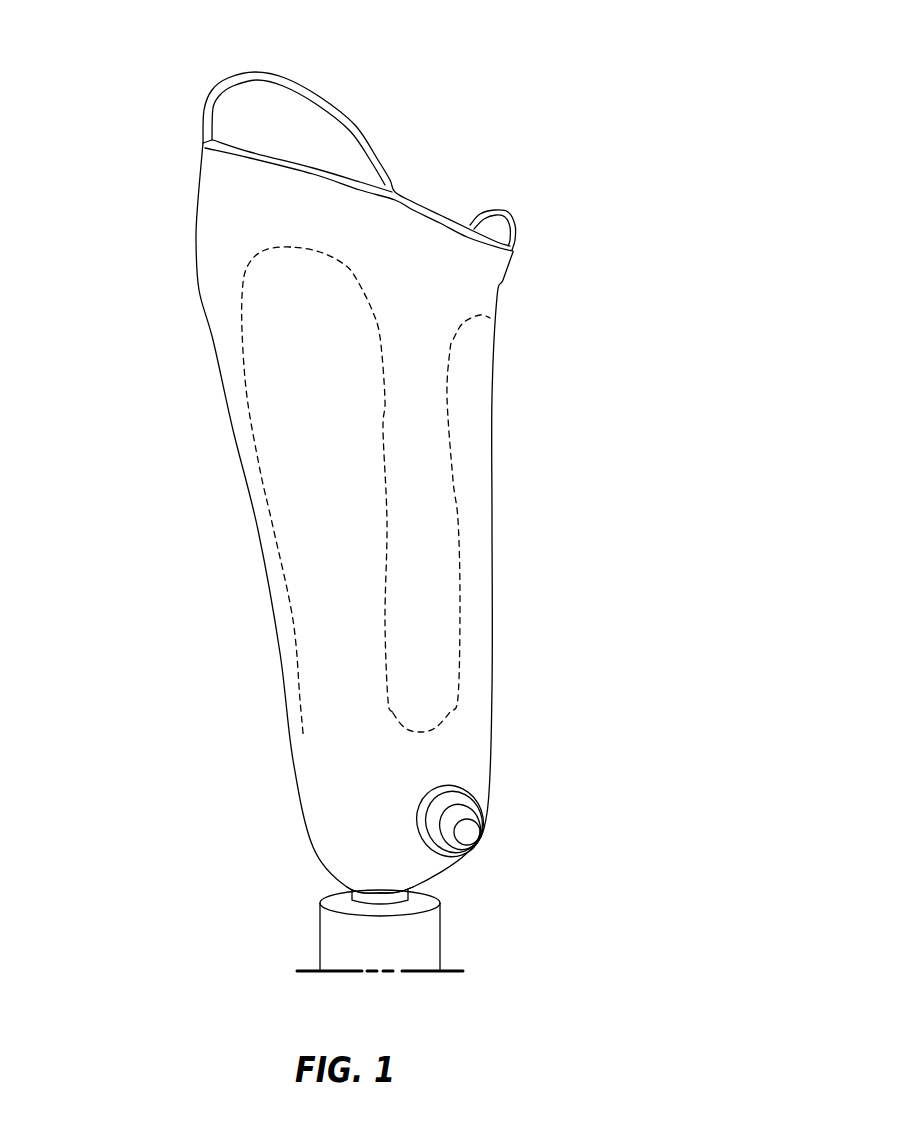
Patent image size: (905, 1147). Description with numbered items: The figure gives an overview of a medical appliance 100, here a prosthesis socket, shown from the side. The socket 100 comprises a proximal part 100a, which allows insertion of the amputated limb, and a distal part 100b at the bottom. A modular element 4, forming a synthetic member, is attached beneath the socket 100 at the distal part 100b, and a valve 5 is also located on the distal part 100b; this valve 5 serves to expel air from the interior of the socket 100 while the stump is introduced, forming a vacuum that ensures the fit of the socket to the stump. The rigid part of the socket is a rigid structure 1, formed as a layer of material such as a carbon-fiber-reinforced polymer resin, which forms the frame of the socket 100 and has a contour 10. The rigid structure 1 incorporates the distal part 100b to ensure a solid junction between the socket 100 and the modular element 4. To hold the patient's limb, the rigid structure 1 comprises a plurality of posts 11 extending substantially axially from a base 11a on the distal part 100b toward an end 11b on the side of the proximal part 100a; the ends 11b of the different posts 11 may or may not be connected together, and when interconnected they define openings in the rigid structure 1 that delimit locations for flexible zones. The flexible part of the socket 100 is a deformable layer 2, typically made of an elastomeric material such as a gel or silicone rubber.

The medical appliance 100 is at (463, 88).
The proximal part 100a is at (178, 123).
The distal part 100b is at (291, 856).
The rigid structure 1 is at (472, 405).
The deformable layer 2 is at (440, 287).
The contour 10 is at (387, 477).
The posts 11 is at (307, 415).
The base 11a is at (347, 752).
The end 11b is at (283, 308).
The modular element 4 is at (452, 935).
The valve 5 is at (490, 840).